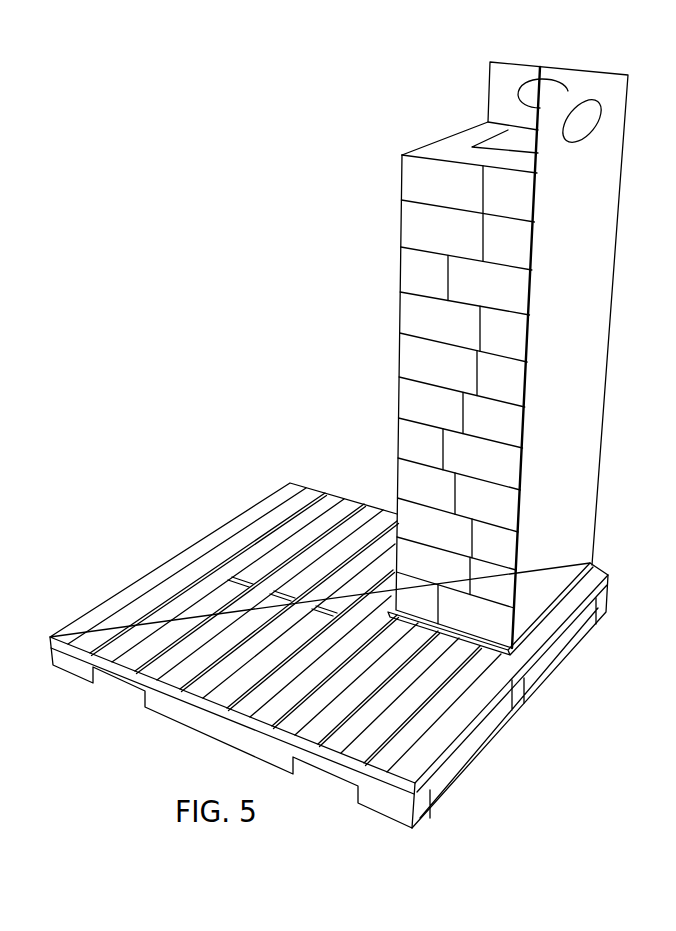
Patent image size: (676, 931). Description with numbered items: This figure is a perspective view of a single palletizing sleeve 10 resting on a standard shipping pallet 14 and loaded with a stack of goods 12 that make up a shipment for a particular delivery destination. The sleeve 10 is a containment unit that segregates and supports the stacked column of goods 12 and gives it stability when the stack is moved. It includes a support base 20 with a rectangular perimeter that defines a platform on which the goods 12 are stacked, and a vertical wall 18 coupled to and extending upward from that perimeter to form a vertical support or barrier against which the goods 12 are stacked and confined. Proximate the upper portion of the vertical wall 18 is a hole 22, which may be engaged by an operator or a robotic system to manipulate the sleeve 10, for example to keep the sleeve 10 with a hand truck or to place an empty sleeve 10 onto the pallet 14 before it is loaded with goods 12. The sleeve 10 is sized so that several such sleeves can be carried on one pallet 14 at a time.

The palletizing sleeve 10 is at (217, 197).
The stack of goods 12 is at (427, 277).
The pallet 14 is at (212, 565).
The vertical wall 18 is at (495, 97).
The support base 20 is at (495, 654).
The hole 22 is at (572, 92).